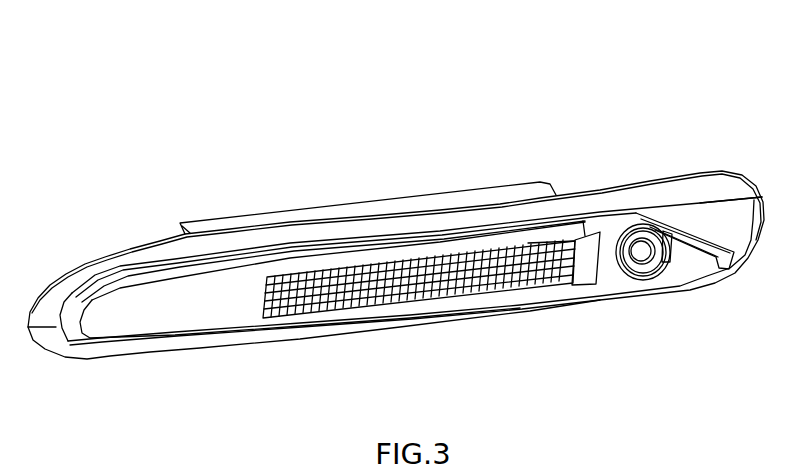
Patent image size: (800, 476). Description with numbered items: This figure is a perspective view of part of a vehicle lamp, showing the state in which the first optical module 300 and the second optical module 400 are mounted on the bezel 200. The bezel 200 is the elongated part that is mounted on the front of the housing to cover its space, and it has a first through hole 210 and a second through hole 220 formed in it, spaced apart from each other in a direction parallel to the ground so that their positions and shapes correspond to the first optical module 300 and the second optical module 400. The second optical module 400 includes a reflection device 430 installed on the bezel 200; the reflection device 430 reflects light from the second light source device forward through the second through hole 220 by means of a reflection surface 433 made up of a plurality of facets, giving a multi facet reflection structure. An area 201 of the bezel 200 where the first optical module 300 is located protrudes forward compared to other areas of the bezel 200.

The second optical module 400 is at (376, 80).
The reflection device 430 is at (336, 150).
The reflection surface 433 is at (337, 268).
The bezel 200 is at (430, 212).
The second through hole 220 is at (528, 243).
The first optical module 300 is at (643, 218).
The area of the bezel 201 is at (688, 207).
The first through hole 210 is at (697, 228).